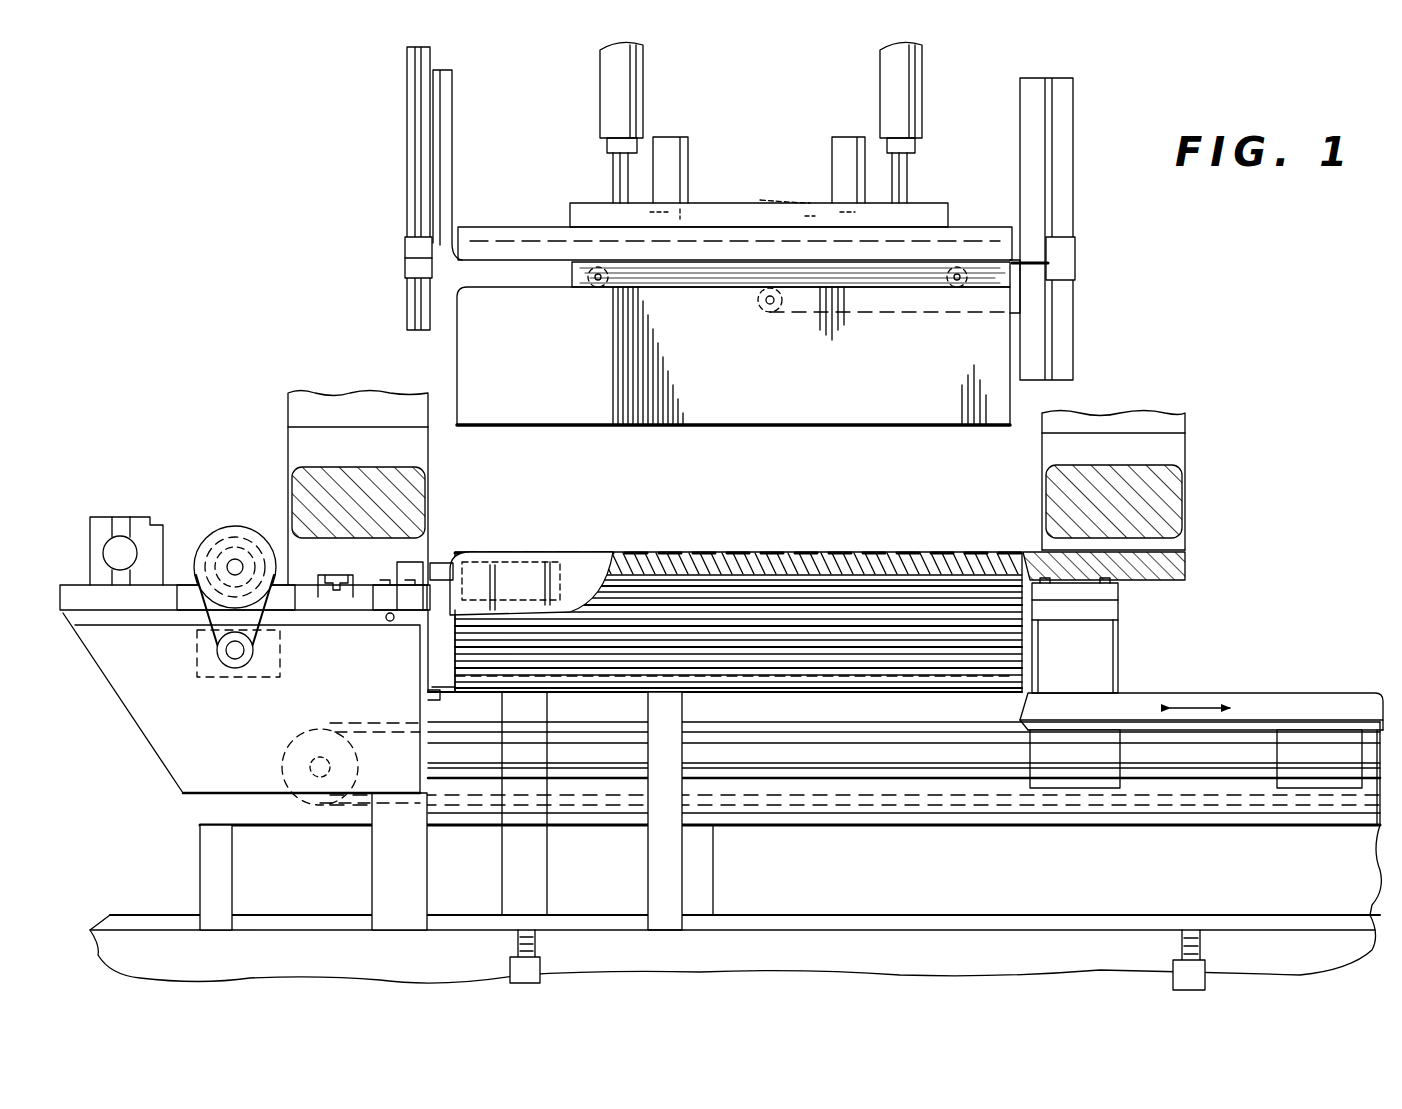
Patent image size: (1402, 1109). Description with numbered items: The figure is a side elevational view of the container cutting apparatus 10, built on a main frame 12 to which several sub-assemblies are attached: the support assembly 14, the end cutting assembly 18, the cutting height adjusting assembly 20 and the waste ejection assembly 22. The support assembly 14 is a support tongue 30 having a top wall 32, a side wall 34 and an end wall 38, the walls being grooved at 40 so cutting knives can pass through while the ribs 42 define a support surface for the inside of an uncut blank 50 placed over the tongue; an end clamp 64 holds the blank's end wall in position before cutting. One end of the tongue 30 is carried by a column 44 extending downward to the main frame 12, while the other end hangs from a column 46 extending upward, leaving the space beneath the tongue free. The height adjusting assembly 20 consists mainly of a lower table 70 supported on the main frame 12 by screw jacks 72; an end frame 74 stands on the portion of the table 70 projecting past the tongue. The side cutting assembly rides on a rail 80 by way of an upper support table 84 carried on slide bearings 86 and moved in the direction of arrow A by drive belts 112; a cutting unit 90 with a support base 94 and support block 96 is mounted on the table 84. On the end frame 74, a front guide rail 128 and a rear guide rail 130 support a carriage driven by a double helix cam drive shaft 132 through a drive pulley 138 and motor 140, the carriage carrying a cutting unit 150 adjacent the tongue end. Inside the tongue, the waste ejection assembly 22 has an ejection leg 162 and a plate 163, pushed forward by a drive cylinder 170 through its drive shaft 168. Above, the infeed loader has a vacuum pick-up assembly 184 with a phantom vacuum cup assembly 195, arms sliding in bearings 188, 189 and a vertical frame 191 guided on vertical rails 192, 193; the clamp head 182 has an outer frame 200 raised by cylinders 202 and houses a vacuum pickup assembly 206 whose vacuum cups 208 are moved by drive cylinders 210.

The present invention 10 is at (1255, 283).
The main frame 12 is at (110, 972).
The support assembly 14 is at (775, 520).
The end cutting assembly 18 is at (190, 348).
The cutting height adjusting assembly 20 is at (160, 836).
The waste ejection assembly 22 is at (810, 630).
The support tongue 30 is at (885, 690).
The top wall 32 is at (585, 550).
The side wall 34 is at (700, 556).
The end wall 38 is at (440, 672).
The grooves 40 is at (980, 590).
The ribs 42 is at (938, 598).
The column 44 is at (538, 868).
The column 46 is at (1178, 452).
The blank 50 is at (552, 384).
The end clamp 64 is at (453, 562).
The lower table 70 is at (935, 891).
The screw jacks 72 is at (545, 968).
The end frame 74 is at (222, 728).
The rail 80 is at (830, 737).
The upper support table 84 is at (1270, 700).
The slide bearings 86 is at (1086, 771).
The cutting unit 90 is at (1140, 645).
The support base 94 is at (1082, 668).
The support block 96 is at (1112, 607).
The drive belts 112 is at (1112, 805).
The front guide rail 128 is at (333, 598).
The rear guide rail 130 is at (118, 536).
The double helix cam drive shaft 132 is at (238, 560).
The drive pulley 138 is at (210, 537).
The motor 140 is at (197, 655).
The cutting unit 150 is at (385, 598).
The ejection leg 162 is at (560, 702).
The plate 163 is at (448, 700).
The drive shaft 168 is at (628, 700).
The drive cylinder 170 is at (782, 690).
The clamp head 182 is at (930, 205).
The vacuum pick-up assembly 184 is at (572, 280).
The bearing 188 is at (598, 290).
The bearing 189 is at (938, 288).
The vertical frame 191 is at (452, 155).
The vertical rail 192 is at (402, 128).
The vertical rail 193 is at (1075, 118).
The vacuum cup assembly 195 is at (690, 288).
The outer frame 200 is at (590, 203).
The cylinders 202 is at (878, 70).
The vacuum pickup assembly 206 is at (760, 145).
The vacuum cups 208 is at (800, 203).
The drive cylinders 210 is at (830, 165).